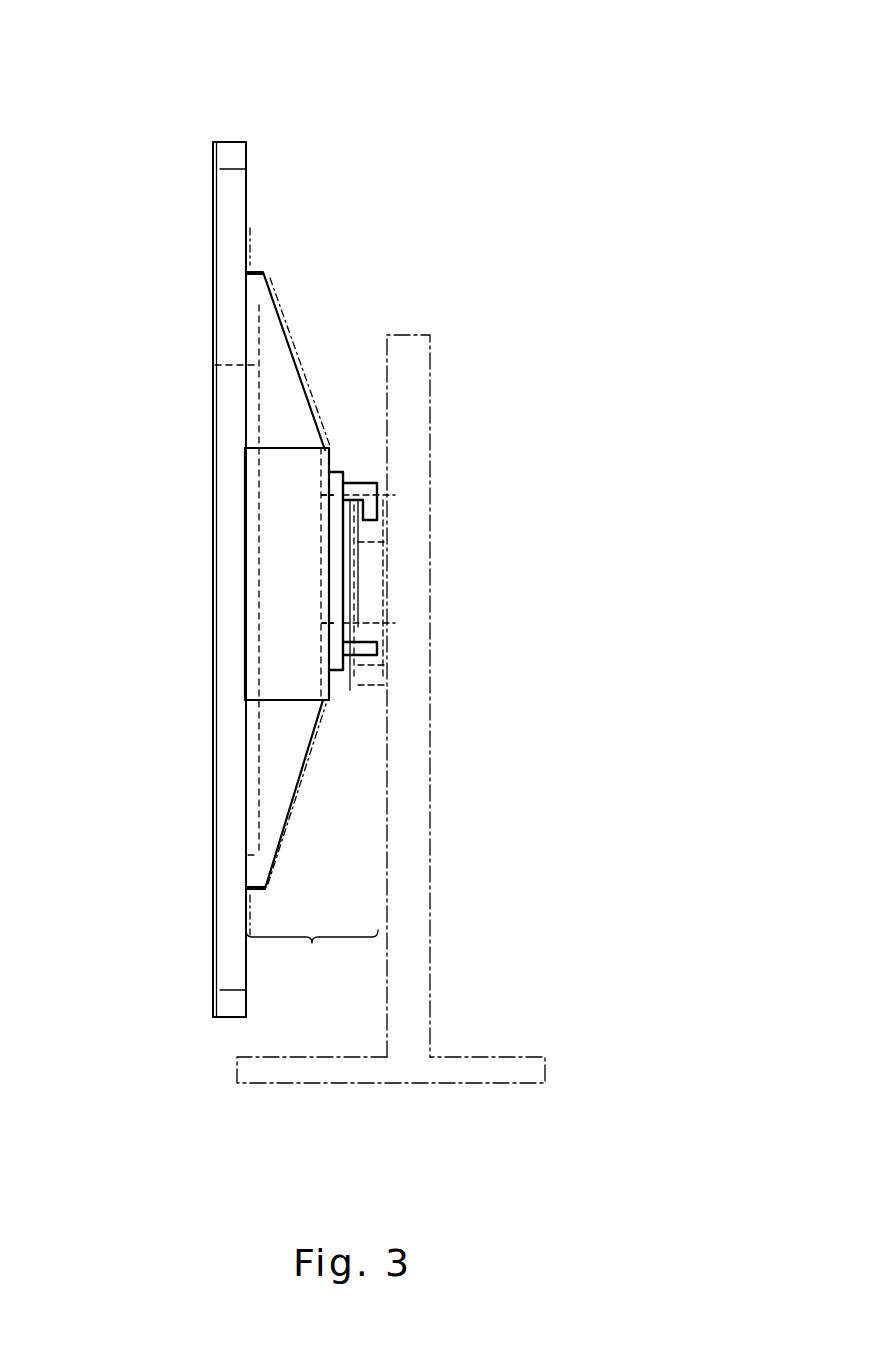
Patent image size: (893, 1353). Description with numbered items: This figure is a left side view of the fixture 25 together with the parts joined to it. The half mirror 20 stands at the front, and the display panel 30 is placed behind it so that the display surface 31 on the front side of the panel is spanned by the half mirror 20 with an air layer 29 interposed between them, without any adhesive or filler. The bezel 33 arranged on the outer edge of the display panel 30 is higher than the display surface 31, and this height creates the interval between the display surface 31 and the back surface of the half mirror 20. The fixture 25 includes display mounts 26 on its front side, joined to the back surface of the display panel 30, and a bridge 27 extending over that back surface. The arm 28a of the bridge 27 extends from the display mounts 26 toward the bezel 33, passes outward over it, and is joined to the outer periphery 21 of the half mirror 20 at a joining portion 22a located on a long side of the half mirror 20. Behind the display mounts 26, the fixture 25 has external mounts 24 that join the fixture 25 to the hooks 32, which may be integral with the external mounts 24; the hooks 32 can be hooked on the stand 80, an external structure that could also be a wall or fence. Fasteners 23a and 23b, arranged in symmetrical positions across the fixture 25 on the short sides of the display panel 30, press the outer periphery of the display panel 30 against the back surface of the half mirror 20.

The half mirror 20 is at (212, 140).
The outer periphery 21 is at (212, 1005).
The joining portion 22a is at (245, 590).
The fastener 23a is at (263, 268).
The fastener 23b is at (268, 889).
The external mount 24 is at (387, 498).
The fixture 25 is at (312, 954).
The display mount 26 is at (320, 530).
The bridge 27 is at (335, 470).
The arm 28a is at (296, 684).
The air layer 29 is at (247, 750).
The display panel 30 is at (275, 318).
The display surface 31 is at (258, 365).
The hook 32 is at (352, 498).
The bezel 33 is at (252, 290).
The stand 80 is at (430, 335).